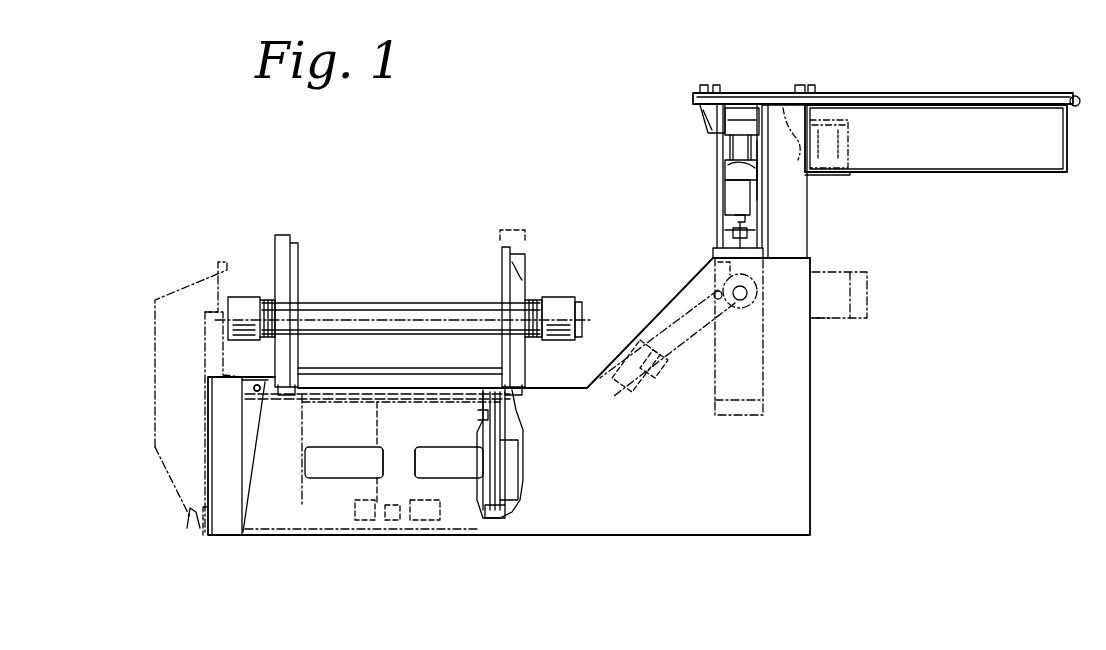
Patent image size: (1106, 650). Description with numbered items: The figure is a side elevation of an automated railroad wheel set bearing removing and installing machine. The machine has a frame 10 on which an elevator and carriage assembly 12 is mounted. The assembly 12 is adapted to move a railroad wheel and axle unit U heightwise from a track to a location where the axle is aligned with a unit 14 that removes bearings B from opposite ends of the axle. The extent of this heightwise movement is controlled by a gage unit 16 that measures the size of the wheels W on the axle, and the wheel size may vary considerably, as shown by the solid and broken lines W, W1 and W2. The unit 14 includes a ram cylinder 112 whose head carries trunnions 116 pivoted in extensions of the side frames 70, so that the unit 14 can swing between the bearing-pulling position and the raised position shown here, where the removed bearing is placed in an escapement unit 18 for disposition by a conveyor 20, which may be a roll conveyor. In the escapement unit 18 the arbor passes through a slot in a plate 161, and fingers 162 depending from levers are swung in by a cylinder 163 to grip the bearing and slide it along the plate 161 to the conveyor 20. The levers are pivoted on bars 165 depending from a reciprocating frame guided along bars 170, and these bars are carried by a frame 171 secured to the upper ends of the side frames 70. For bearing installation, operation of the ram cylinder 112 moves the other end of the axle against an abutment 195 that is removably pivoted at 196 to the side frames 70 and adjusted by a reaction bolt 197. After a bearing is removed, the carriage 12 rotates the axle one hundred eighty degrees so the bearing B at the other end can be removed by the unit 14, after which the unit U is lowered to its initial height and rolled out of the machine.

The frame 10 is at (718, 512).
The elevator and carriage assembly 12 is at (368, 362).
The bearing removing unit 14 is at (706, 206).
The gage unit 16 is at (542, 467).
The escapement unit 18 is at (707, 160).
The conveyor 20 is at (953, 187).
The side frames 70 is at (592, 437).
The ram cylinder 112 is at (767, 378).
The trunnions 116 is at (738, 300).
The plate 161 is at (760, 160).
The fingers 162 is at (745, 152).
The cylinder 163 is at (722, 91).
The bars 165 is at (706, 120).
The bars 170 is at (738, 98).
The frame 171 is at (692, 103).
The abutment 195 is at (232, 262).
The pivot 196 is at (252, 388).
The reaction bolt 197 is at (188, 526).
The wheel and axle unit U is at (398, 297).
The bearings B is at (246, 298).
The wheels W is at (298, 262).
The wheel (alternate size, broken line) W1 is at (525, 280).
The wheel (alternate size, broken line) W2 is at (518, 230).